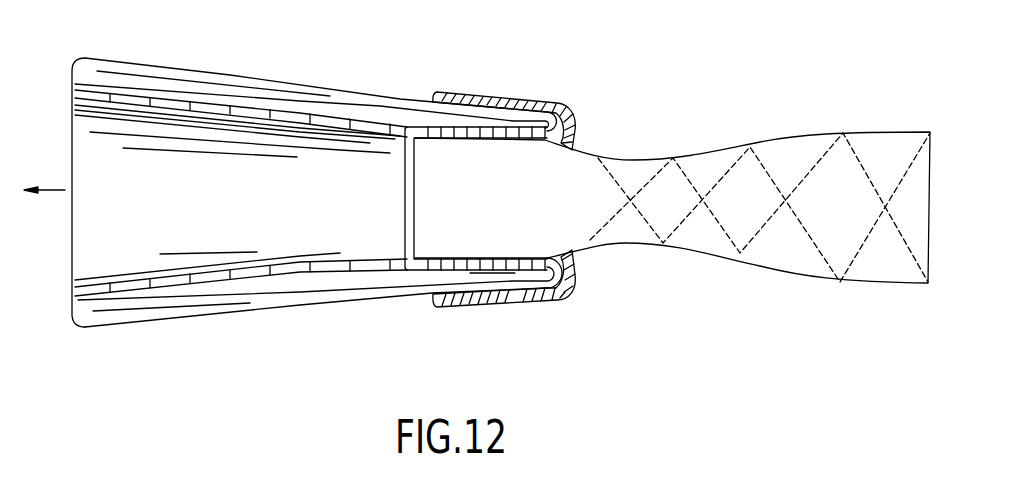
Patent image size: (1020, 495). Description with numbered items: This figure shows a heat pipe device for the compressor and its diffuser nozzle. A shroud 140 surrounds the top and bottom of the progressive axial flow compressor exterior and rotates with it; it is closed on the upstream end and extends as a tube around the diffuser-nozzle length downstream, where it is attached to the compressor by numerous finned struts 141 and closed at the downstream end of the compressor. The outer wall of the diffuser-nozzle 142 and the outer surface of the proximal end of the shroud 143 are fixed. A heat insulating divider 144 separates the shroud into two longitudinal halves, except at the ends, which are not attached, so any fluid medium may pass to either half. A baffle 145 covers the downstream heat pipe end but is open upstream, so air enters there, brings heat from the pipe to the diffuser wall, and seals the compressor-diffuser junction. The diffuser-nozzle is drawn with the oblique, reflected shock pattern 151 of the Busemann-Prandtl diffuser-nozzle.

The shroud 140 is at (167, 318).
The finned struts 141 is at (350, 268).
The outer wall of the diffuser-nozzle 142 is at (572, 280).
The outer surface of the proximal end of the shroud 143 is at (515, 273).
The heat insulating divider 144 is at (250, 298).
The baffle 145 is at (507, 97).
The oblique reflected shock pattern 151 is at (772, 172).